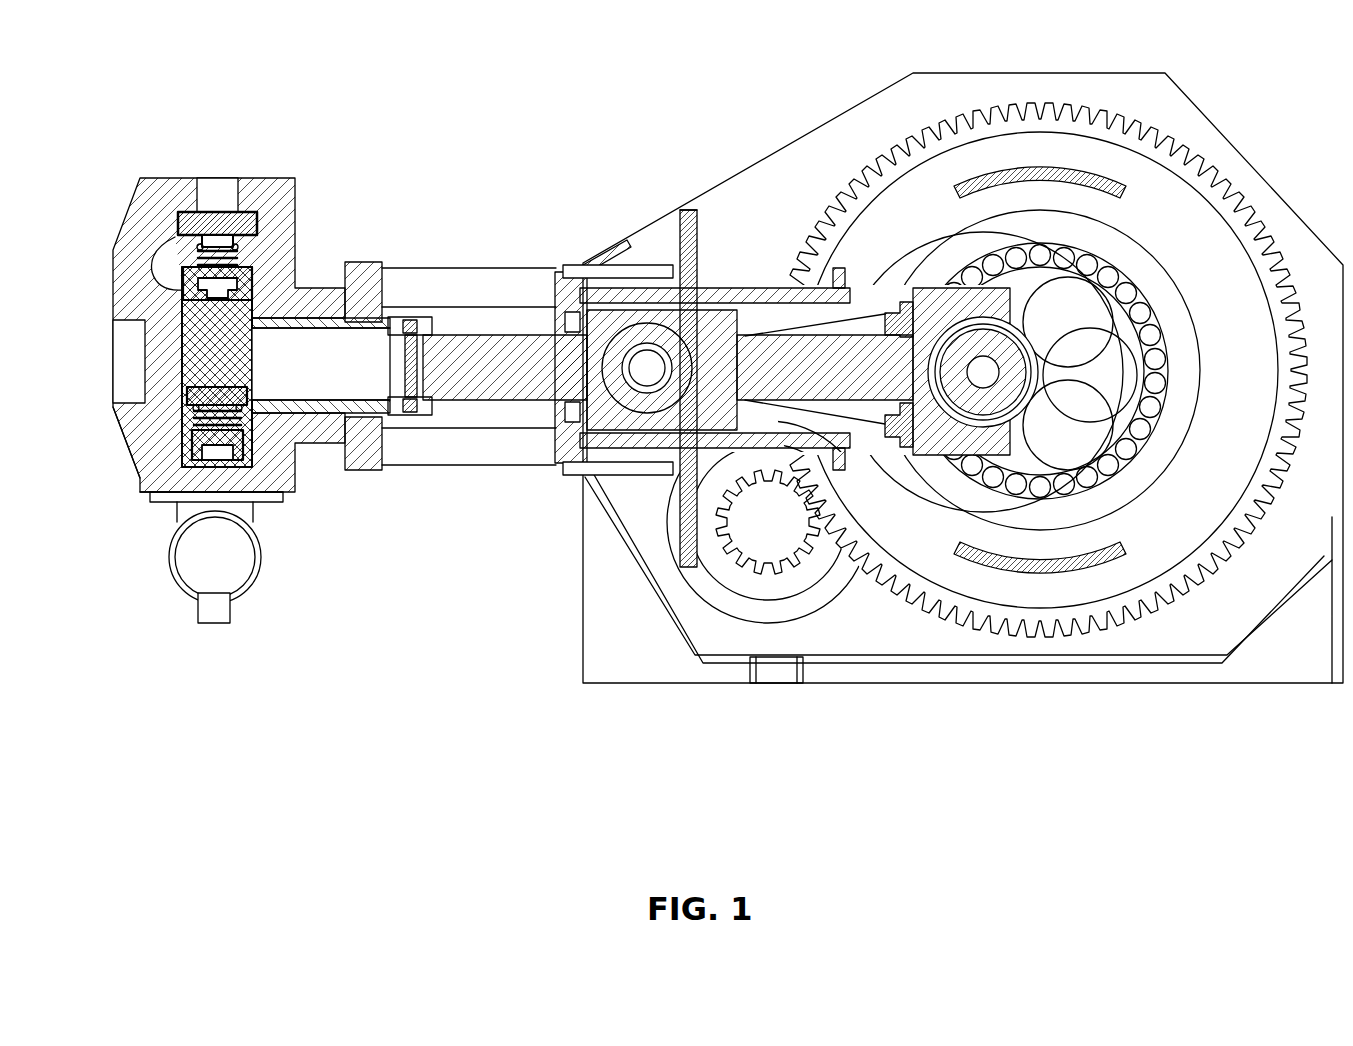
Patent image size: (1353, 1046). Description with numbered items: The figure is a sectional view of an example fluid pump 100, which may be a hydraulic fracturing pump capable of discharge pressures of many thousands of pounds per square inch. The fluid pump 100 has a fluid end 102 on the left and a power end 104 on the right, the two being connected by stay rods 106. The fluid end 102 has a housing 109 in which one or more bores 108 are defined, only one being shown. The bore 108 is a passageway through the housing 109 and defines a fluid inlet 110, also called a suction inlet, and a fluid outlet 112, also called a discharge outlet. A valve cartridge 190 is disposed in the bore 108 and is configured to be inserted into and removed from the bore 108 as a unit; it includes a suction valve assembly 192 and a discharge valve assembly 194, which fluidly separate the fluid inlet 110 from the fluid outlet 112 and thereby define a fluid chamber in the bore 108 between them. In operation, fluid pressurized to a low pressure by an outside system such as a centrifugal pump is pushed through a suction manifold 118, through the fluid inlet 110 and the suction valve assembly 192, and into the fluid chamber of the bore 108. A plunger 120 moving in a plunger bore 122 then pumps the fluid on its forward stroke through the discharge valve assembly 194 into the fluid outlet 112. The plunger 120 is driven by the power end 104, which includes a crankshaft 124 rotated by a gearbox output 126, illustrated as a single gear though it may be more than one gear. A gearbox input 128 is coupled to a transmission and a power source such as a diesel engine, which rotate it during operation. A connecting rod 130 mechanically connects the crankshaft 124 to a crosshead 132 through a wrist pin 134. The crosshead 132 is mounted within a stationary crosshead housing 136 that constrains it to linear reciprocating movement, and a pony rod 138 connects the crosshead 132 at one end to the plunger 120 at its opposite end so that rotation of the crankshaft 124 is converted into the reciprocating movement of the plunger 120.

The fluid pump 100 is at (598, 98).
The fluid end 102 is at (312, 163).
The power end 104 is at (1245, 720).
The stay rods 106 is at (484, 292).
The bore 108 is at (172, 378).
The housing 109 is at (140, 222).
The fluid inlet 110 is at (185, 480).
The fluid outlet 112 is at (248, 247).
The suction manifold 118 is at (263, 558).
The plunger 120 is at (377, 391).
The plunger bore 122 is at (273, 330).
The crankshaft 124 is at (963, 323).
The gearbox output 126 is at (1190, 238).
The gearbox input 128 is at (790, 533).
The connecting rod 130 is at (765, 335).
The crosshead 132 is at (612, 292).
The wrist pin 134 is at (673, 342).
The crosshead housing 136 is at (742, 283).
The pony rod 138 is at (486, 382).
The valve cartridge 190 is at (100, 370).
The suction valve assembly 192 is at (243, 437).
The discharge valve assembly 194 is at (248, 278).